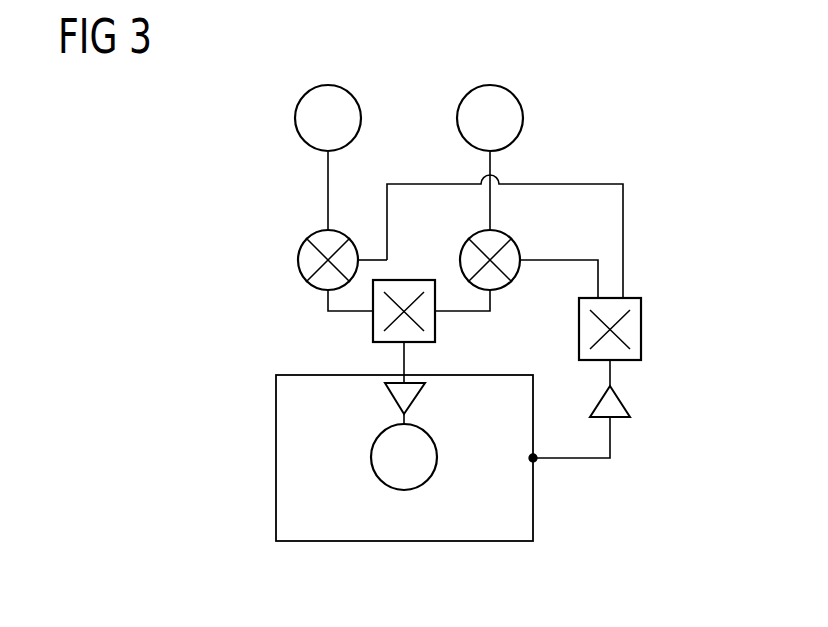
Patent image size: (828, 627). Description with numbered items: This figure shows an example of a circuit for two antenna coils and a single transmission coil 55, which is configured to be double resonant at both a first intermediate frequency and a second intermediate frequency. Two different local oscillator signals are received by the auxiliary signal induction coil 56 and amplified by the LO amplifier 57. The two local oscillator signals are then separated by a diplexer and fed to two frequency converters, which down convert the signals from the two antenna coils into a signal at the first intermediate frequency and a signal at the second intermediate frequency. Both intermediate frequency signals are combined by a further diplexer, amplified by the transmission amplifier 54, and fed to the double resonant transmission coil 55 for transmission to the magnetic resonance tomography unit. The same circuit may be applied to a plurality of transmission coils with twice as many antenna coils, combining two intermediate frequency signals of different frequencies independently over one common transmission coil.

The transmission amplifier 54 is at (387, 399).
The transmission coil 55 is at (407, 492).
The auxiliary signal induction coil 56 is at (536, 503).
The LO amplifier 57 is at (621, 400).